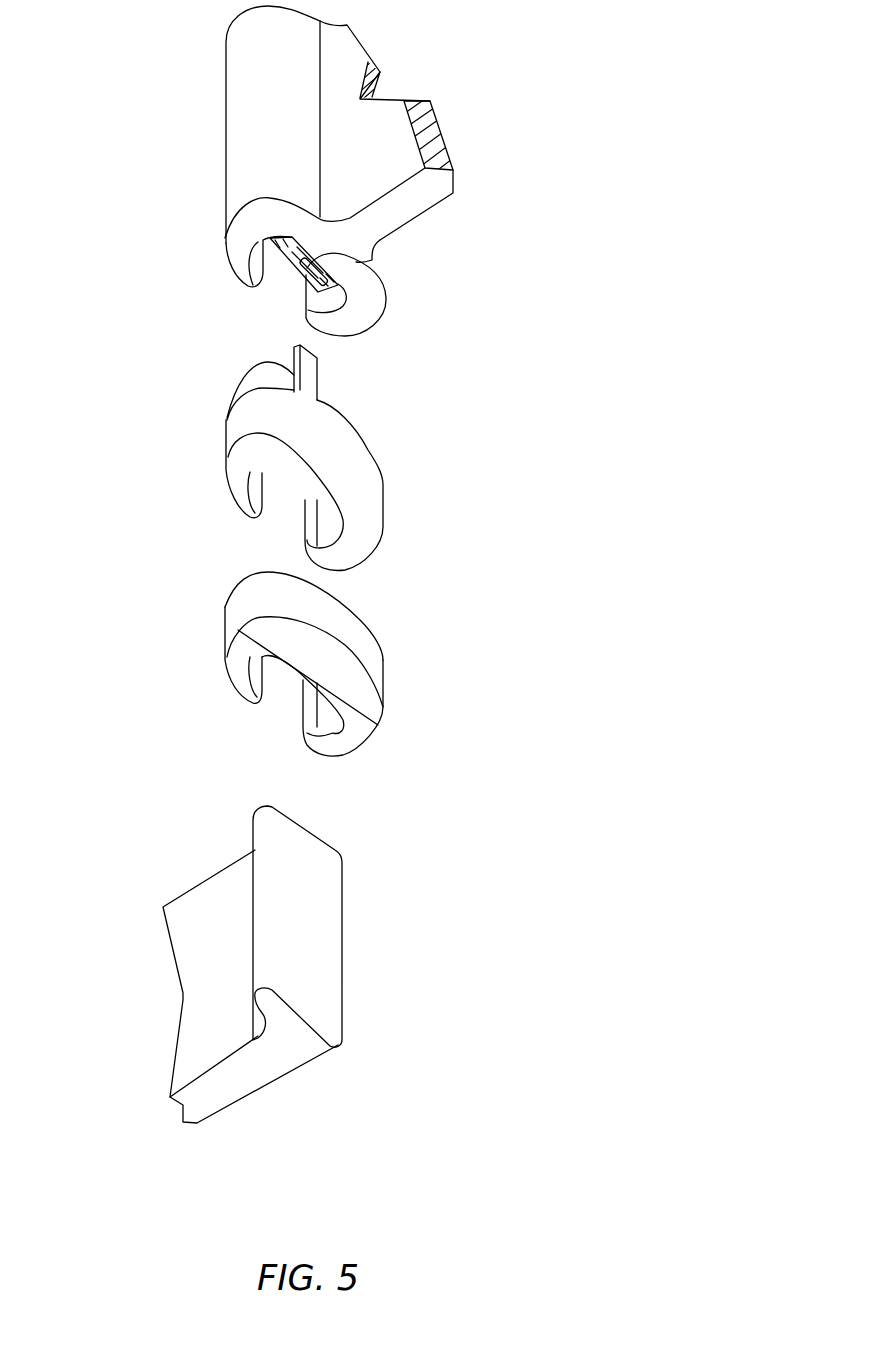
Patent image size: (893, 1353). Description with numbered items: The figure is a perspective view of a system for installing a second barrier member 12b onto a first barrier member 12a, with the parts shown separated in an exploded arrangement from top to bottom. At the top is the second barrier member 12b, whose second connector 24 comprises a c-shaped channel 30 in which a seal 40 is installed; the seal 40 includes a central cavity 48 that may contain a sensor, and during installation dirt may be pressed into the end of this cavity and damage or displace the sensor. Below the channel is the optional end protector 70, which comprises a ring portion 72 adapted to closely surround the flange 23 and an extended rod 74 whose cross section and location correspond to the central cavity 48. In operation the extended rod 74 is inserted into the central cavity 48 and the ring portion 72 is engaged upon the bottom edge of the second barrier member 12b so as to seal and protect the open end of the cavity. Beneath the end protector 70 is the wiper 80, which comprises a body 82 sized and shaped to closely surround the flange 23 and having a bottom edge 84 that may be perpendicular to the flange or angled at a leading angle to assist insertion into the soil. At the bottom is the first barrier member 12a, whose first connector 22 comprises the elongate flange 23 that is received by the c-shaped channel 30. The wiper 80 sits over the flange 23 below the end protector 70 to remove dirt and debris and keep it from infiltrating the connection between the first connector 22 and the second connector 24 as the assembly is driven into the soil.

The second connector 24 is at (226, 178).
The second barrier member 12b is at (410, 207).
The seal 40 is at (378, 290).
The central cavity 48 is at (306, 253).
The c-shaped channel 30 is at (282, 290).
The end protector 70 is at (303, 457).
The extended rod 74 is at (293, 353).
The ring portion 72 is at (233, 435).
The wiper 80 is at (303, 664).
The bottom edge 84 is at (305, 652).
The body 82 is at (233, 616).
The first connector 22 is at (274, 972).
The first barrier member 12a is at (200, 897).
The flange 23 is at (330, 1047).